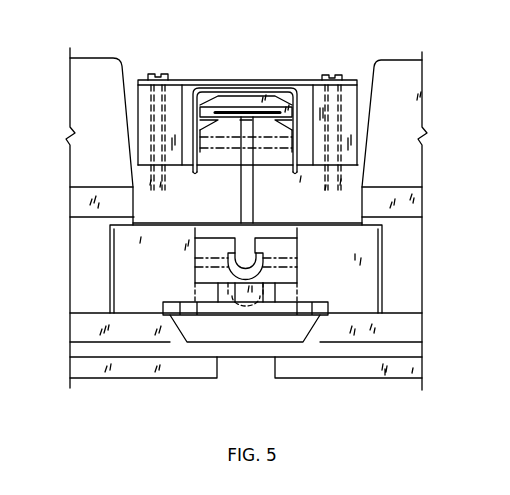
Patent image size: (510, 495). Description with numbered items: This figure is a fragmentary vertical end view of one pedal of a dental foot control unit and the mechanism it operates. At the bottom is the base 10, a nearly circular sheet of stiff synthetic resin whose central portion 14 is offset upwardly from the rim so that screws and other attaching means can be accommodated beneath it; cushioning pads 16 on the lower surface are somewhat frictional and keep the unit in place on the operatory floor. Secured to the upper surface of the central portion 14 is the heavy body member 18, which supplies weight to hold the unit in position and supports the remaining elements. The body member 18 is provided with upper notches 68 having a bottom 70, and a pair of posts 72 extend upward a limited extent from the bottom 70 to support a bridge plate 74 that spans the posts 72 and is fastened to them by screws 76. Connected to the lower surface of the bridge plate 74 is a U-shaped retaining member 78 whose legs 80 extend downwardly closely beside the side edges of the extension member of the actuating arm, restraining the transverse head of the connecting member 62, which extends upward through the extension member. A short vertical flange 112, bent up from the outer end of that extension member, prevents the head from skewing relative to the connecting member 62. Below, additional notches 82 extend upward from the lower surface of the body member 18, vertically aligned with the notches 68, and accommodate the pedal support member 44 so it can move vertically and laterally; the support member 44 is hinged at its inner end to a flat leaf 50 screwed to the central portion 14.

The base 10 is at (413, 352).
The central portion 14 is at (83, 327).
The cushioning pads 16 is at (127, 372).
The body member 18 is at (82, 168).
The pedal support member 44 is at (290, 250).
The leaf 50 is at (175, 310).
The connecting member 62 is at (258, 198).
The notches 68 is at (367, 125).
The bottom 70 is at (206, 172).
The posts 72 is at (172, 97).
The bridge plate 74 is at (204, 83).
The screws 76 is at (152, 72).
The retaining member 78 is at (285, 92).
The legs 80 is at (192, 127).
The notches 82 is at (110, 238).
The vertical flange 112 is at (228, 93).